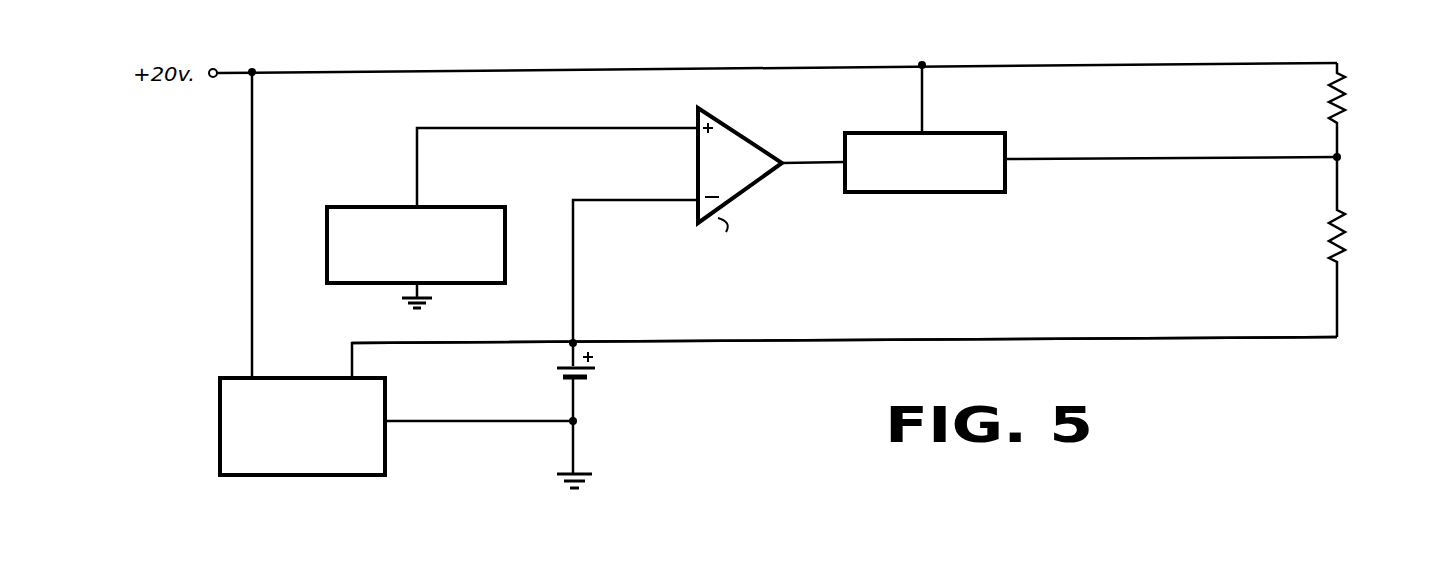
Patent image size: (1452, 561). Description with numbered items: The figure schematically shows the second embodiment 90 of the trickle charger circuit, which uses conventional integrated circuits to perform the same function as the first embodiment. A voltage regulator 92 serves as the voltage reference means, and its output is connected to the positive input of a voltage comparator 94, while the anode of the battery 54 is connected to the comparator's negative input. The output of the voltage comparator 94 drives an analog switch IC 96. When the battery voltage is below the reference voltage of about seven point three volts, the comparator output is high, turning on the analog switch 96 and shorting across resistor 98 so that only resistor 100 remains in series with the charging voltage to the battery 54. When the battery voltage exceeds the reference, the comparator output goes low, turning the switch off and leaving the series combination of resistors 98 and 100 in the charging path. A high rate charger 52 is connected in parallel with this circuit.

The high rate charger 52 is at (218, 408).
The battery 54 is at (590, 377).
The second embodiment 90 is at (1280, 377).
The voltage regulator 92 is at (390, 206).
The voltage comparator 94 is at (753, 142).
The analog switch IC 96 is at (925, 193).
The resistor 98 is at (1345, 121).
The resistor 100 is at (1347, 243).